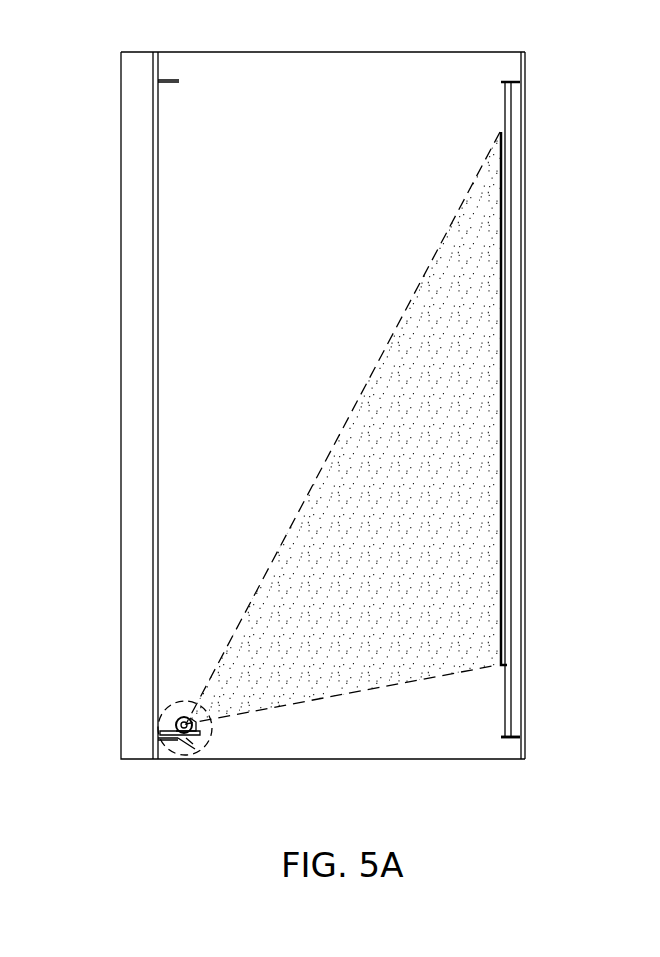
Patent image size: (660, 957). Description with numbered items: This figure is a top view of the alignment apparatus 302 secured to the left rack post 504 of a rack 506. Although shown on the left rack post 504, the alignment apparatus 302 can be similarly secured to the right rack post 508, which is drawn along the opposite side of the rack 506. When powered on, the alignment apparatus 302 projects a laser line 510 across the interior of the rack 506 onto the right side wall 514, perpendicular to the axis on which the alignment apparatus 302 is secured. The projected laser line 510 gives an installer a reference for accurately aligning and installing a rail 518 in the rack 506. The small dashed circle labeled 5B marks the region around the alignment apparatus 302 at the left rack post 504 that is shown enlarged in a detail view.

The rack 506 is at (121, 154).
The right side wall 514 is at (525, 68).
The rail 518 is at (505, 148).
The laser line 510 is at (502, 348).
The right rack post 508 is at (515, 740).
The left rack post 504 is at (162, 760).
The alignment apparatus 302 is at (188, 741).
The detail view circle 5B is at (212, 728).